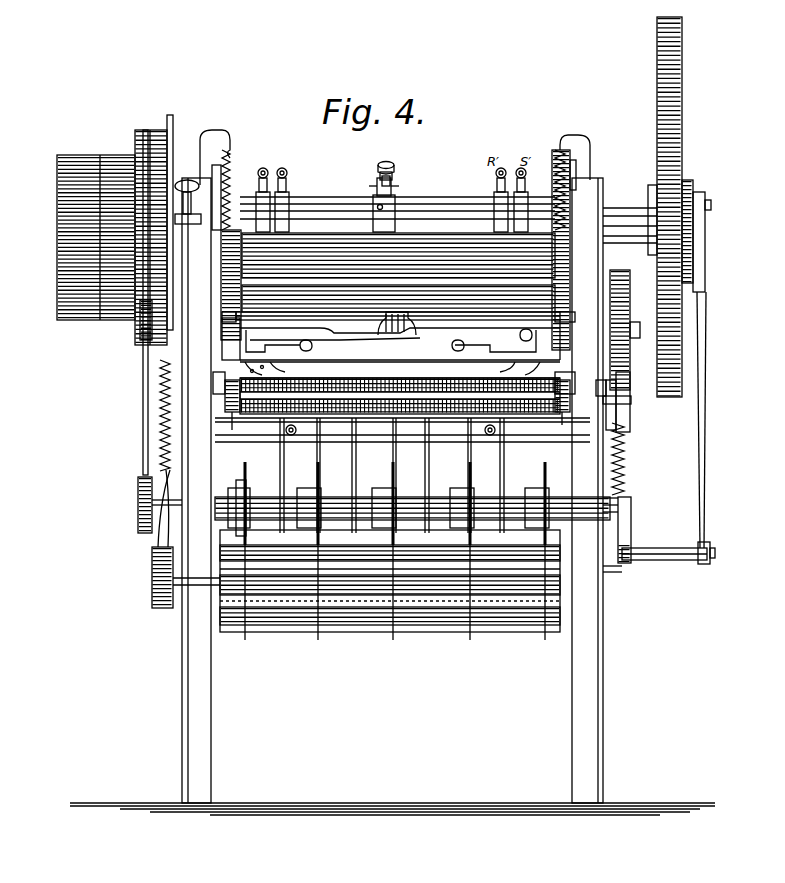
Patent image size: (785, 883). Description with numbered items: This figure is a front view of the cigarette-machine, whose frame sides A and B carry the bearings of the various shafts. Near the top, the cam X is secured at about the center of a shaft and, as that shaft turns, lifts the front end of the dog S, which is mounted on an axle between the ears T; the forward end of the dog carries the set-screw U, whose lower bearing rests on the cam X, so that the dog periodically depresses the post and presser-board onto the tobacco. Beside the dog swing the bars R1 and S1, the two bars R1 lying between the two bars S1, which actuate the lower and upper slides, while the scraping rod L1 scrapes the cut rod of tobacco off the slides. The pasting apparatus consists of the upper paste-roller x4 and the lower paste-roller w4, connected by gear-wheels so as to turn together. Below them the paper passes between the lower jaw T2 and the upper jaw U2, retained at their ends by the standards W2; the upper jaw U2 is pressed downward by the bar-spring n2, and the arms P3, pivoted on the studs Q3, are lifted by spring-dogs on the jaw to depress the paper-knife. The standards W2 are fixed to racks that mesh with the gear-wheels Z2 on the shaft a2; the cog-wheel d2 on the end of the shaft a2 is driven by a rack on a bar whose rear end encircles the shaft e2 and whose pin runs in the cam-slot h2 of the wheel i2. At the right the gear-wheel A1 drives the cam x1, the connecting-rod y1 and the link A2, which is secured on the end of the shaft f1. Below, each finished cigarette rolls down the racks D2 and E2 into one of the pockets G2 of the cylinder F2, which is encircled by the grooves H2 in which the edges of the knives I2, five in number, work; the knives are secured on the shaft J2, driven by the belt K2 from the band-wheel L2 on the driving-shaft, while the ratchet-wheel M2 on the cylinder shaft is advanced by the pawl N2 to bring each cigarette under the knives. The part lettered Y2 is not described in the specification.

The left frame standard A is at (196, 490).
The right frame standard B is at (587, 490).
The band-wheel L2 is at (103, 216).
The belt K2 is at (150, 331).
The pawl N2 is at (161, 453).
The ratchet-wheel M2 is at (169, 577).
The scraping bar L1 is at (448, 213).
The swinging bar S1 is at (261, 193).
The swinging bar R1 is at (286, 193).
The cam X is at (391, 214).
The ears T is at (385, 187).
The dog S is at (390, 169).
The set-screw U is at (376, 172).
The upper paste-roller x4 is at (398, 255).
The lower paste-roller w4 is at (398, 298).
The arm P3 is at (250, 322).
The stud Q3 is at (222, 317).
The upper jaw U2 is at (391, 336).
The bar-spring n2 is at (340, 337).
The lower jaw T2 is at (400, 370).
The standard W2 is at (392, 370).
The shaft a2 is at (400, 396).
The bracket Y'' Y2 is at (213, 378).
The gear-wheel Z2 is at (403, 405).
The cam-slot h2 is at (596, 385).
The rack D2 is at (400, 475).
The rack E2 is at (400, 475).
The knife I2 is at (401, 503).
The shaft J2 is at (412, 508).
The cylinder F2 is at (390, 591).
The pocket G2 is at (390, 585).
The groove H2 is at (399, 640).
The gear-wheel A1 is at (680, 207).
The cam x1 is at (701, 236).
The connecting-rod y1 is at (709, 420).
The link A2 is at (668, 561).
The shaft f1 is at (631, 515).
The cog-wheel d2 is at (603, 424).
The wheel i2 is at (626, 330).
The shaft e2 is at (641, 330).